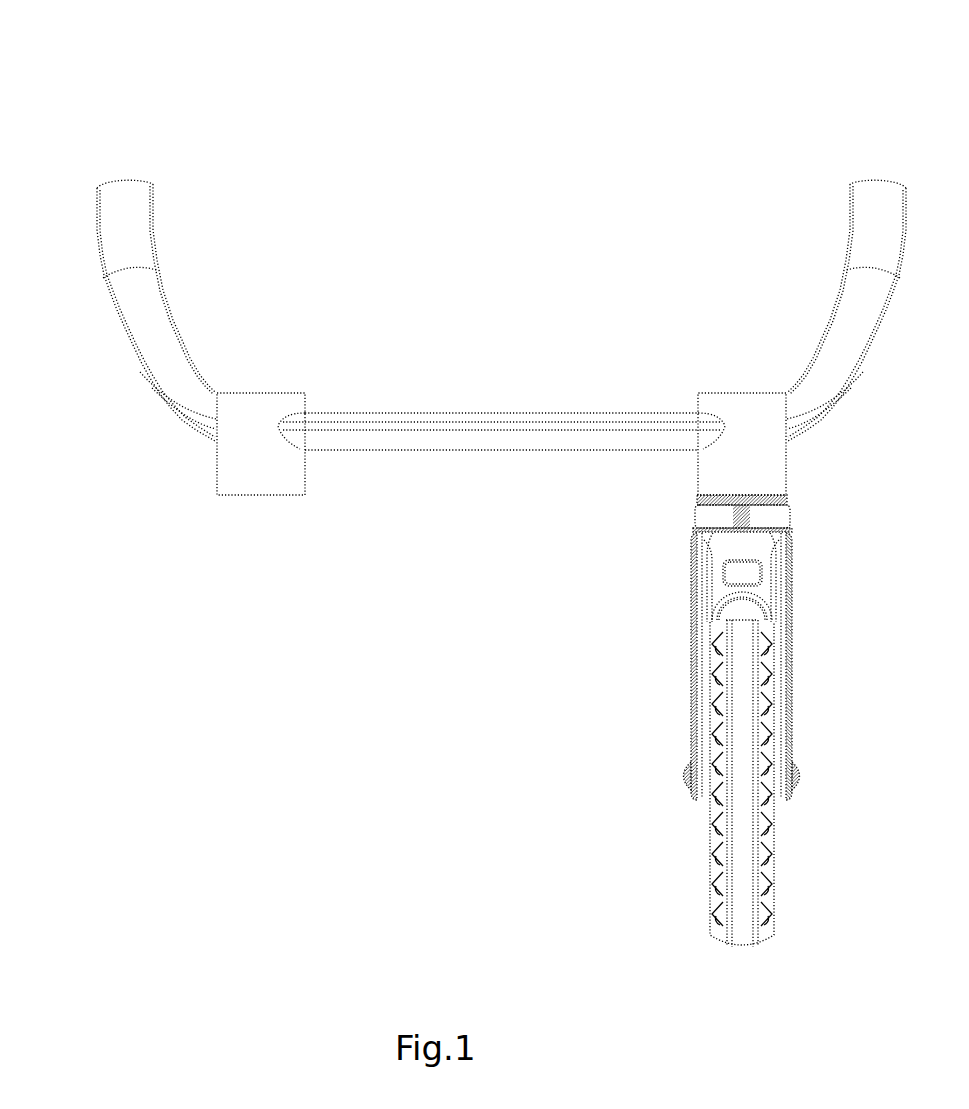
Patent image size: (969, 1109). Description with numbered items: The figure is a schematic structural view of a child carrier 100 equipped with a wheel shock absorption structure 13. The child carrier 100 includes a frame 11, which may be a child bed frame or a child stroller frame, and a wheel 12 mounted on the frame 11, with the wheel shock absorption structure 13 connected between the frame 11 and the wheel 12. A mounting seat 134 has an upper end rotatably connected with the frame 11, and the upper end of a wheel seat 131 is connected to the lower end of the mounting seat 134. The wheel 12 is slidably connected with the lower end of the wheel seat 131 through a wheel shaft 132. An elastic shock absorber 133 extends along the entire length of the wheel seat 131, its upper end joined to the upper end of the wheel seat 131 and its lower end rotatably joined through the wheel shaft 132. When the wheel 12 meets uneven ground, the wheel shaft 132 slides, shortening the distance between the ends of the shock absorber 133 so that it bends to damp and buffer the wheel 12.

The child carrier 100 is at (345, 175).
The frame 11 is at (425, 450).
The wheel 12 is at (720, 933).
The wheel shock absorption structure 13 is at (556, 645).
The wheel seat 131 is at (690, 689).
The wheel shaft 132 is at (677, 775).
The shock absorber 133 is at (704, 728).
The mounting seat 134 is at (722, 589).